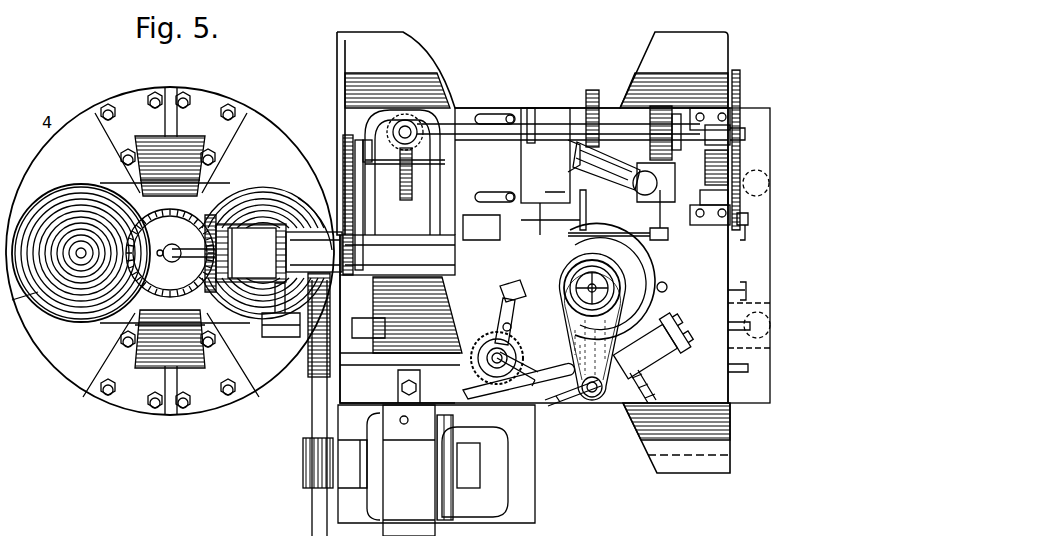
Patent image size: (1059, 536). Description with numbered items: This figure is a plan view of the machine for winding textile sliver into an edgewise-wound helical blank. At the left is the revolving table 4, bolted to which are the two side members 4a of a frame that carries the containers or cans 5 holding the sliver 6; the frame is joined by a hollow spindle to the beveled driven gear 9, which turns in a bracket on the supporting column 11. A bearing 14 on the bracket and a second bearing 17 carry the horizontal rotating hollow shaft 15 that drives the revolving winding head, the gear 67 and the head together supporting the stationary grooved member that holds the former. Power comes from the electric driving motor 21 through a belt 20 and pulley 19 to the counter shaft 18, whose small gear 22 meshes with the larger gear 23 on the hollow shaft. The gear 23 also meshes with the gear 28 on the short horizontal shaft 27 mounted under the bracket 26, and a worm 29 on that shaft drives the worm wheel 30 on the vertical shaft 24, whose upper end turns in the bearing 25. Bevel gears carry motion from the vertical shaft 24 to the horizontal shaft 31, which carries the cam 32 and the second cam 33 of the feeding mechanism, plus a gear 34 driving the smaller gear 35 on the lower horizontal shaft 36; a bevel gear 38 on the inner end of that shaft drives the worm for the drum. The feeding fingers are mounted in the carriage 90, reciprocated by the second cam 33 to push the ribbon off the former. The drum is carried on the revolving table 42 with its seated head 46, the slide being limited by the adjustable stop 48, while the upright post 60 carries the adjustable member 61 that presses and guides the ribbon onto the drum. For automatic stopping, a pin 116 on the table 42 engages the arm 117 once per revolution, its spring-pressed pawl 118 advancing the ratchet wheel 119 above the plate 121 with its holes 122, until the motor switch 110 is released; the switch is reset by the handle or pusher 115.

The revolving table 4 is at (68, 139).
The side members 4a is at (158, 330).
The containers or cans 5 is at (40, 303).
The sliver 6 is at (80, 300).
The beveled driven gear 9 is at (170, 253).
The gear 67 is at (214, 212).
The bearing 14 is at (251, 253).
The horizontal rotating hollow shaft 15 is at (314, 252).
The second bearing 17 is at (397, 255).
The counter shaft 18 is at (293, 335).
The pulley 19 is at (310, 378).
The belt 20 is at (312, 423).
The small gear 22 is at (348, 358).
The supporting column 11 is at (440, 305).
The larger gear 23 is at (350, 195).
The gear 28 is at (342, 148).
The vertical shaft 24 is at (405, 120).
The bearing 25 is at (420, 126).
The bracket 26 is at (377, 198).
The short horizontal shaft 27 is at (414, 172).
The worm 29 is at (412, 147).
The worm wheel 30 is at (417, 122).
The horizontal shaft 31 is at (540, 128).
The cam 32 is at (590, 92).
The second cam 33 is at (660, 105).
The gear 34 is at (742, 88).
The smaller gear 35 is at (740, 232).
The lower horizontal shaft 36 is at (680, 200).
The bevel gear 38 is at (598, 180).
The carriage 90 is at (545, 235).
The revolving table 42 is at (664, 266).
The head 46 is at (640, 282).
The adjustable member 61 is at (608, 323).
The upright post 60 is at (592, 398).
The adjustable stop 48 is at (662, 398).
The pin 116 is at (505, 300).
The spring-pressed pawl 118 is at (476, 328).
The arm 117 is at (480, 372).
The holes 122 is at (480, 388).
The handle or pusher 115 is at (520, 398).
The circuit breaker or switch 110 is at (548, 405).
The ratchet wheel 119 is at (500, 405).
The plate 121 is at (435, 420).
The electric driving motor 21 is at (447, 500).